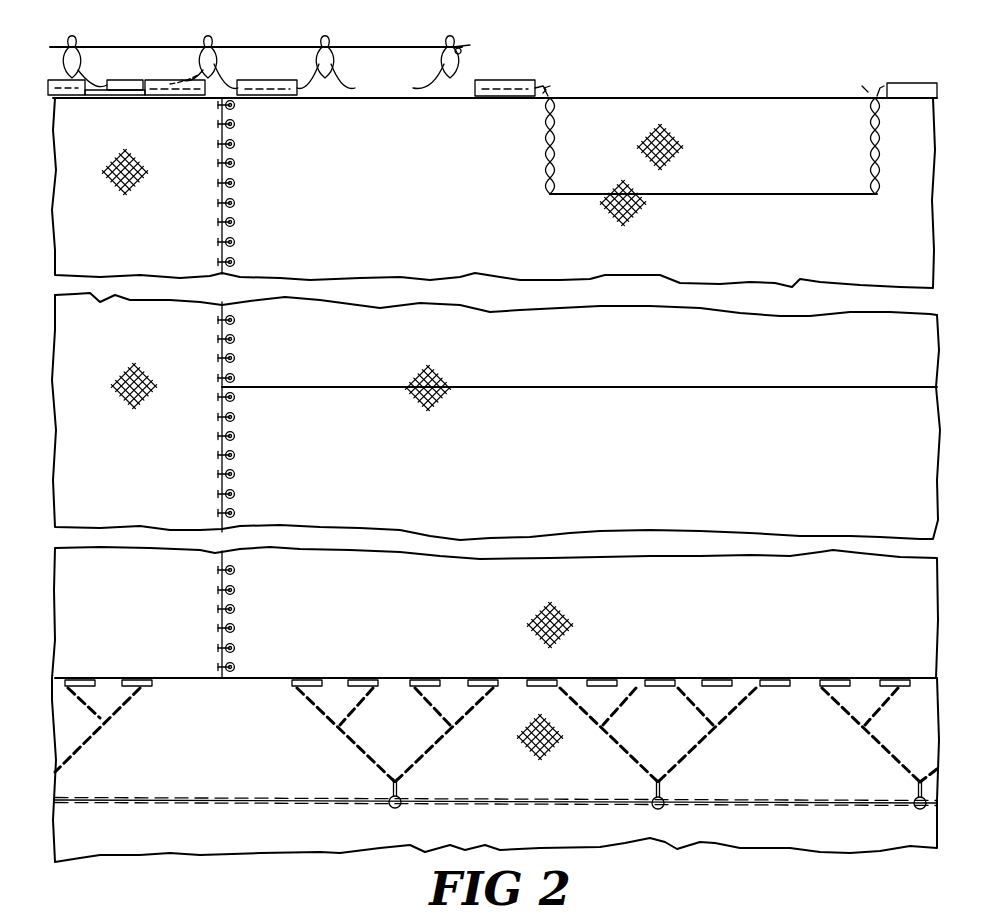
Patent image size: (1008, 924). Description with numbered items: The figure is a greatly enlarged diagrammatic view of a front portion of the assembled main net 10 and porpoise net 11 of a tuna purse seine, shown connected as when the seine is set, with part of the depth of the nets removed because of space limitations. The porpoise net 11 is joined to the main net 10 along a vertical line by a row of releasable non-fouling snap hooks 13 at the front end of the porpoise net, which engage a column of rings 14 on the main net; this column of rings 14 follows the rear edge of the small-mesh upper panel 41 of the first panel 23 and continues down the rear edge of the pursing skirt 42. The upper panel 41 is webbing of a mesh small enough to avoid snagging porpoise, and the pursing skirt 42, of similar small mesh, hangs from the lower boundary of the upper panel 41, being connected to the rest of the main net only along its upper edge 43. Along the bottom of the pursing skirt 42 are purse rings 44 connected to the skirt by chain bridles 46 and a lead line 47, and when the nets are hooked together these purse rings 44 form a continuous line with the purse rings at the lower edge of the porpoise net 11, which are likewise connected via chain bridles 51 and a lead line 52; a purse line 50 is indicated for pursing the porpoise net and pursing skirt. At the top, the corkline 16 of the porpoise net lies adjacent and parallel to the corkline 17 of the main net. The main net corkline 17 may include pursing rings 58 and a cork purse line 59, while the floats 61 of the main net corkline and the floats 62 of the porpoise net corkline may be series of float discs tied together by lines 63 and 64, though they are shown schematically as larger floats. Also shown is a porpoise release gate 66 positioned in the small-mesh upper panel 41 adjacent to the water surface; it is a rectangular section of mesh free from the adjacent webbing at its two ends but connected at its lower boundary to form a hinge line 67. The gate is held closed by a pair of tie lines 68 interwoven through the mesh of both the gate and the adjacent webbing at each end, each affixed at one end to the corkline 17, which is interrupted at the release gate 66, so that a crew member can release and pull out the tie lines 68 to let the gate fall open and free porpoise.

The main net 10 is at (658, 78).
The porpoise net 11 is at (150, 49).
The snap hooks 13 is at (217, 222).
The rings 14 is at (236, 204).
The corkline 16 is at (183, 73).
The corkline 17 is at (490, 68).
The first panel 23 is at (588, 833).
The upper panel 41 is at (570, 236).
The pursing skirt 42 is at (532, 448).
The upper edge 43 is at (620, 388).
The purse rings 44 is at (392, 808).
The chain bridles 46 is at (422, 756).
The lead line 47 is at (416, 680).
The purse line 50 is at (486, 798).
The chain bridles 51 is at (93, 712).
The lead line 52 is at (80, 680).
The pursing rings 58 is at (324, 42).
The cork purse line 59 is at (52, 47).
The floats 61 is at (122, 79).
The floats 62 is at (175, 97).
The lines 63 is at (322, 76).
The lines 64 is at (123, 97).
The porpoise release gate 66 is at (702, 156).
The hinge line 67 is at (728, 194).
The tie lines 68 is at (545, 136).